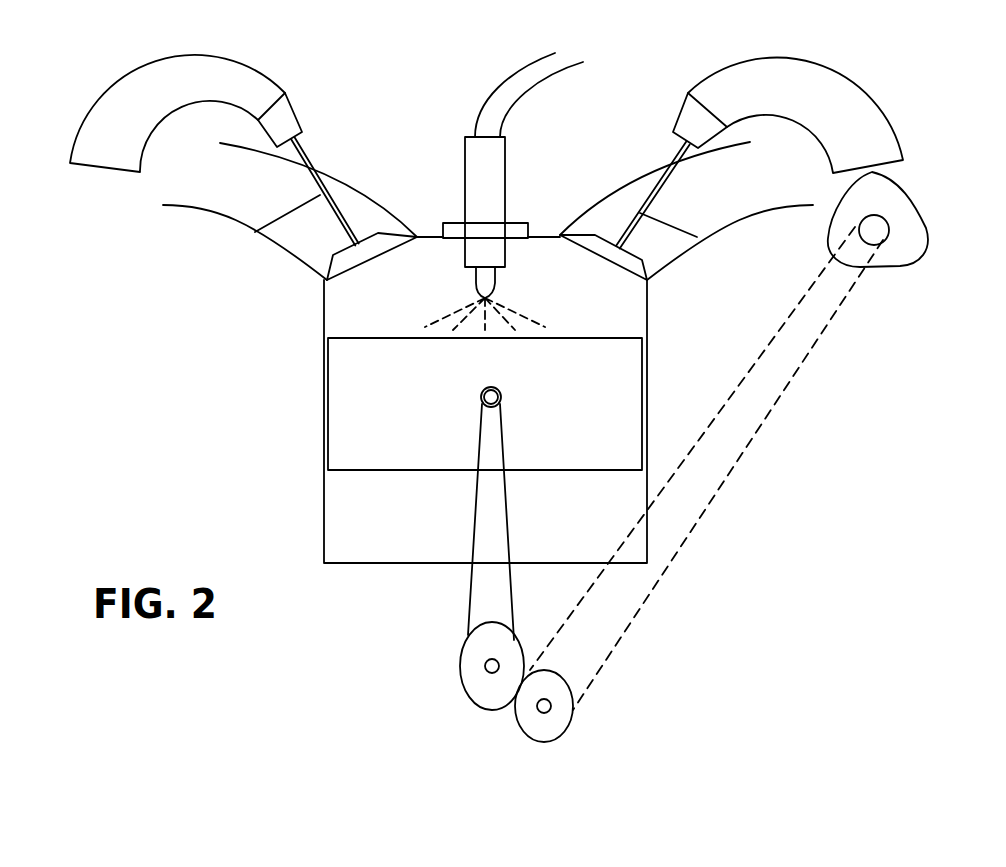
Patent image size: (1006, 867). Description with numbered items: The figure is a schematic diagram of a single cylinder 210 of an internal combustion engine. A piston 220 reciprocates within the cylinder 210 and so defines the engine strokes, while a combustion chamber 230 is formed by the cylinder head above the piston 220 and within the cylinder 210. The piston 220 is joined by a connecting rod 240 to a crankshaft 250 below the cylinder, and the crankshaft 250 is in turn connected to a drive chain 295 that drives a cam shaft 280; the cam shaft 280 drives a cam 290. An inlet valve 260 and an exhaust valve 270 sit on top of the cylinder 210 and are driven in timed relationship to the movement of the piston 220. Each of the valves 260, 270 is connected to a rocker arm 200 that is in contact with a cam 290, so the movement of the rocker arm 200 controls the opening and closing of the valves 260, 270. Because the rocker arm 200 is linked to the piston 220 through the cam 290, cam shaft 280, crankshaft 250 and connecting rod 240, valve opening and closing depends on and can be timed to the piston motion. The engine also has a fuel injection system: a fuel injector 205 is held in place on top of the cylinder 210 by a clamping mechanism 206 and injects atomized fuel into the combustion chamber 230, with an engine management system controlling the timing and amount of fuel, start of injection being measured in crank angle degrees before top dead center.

The rocker arm 200 is at (122, 100).
The fuel injector 205 is at (495, 162).
The clamping mechanism 206 is at (533, 231).
The cylinder 210 is at (323, 320).
The piston 220 is at (613, 367).
The combustion chamber 230 is at (360, 302).
The connecting rod 240 is at (488, 513).
The crankshaft 250 is at (488, 710).
The inlet valve 260 is at (707, 242).
The exhaust valve 270 is at (255, 240).
The cam shaft 280 is at (880, 237).
The cam 290 is at (908, 230).
The drive chain 295 is at (757, 403).